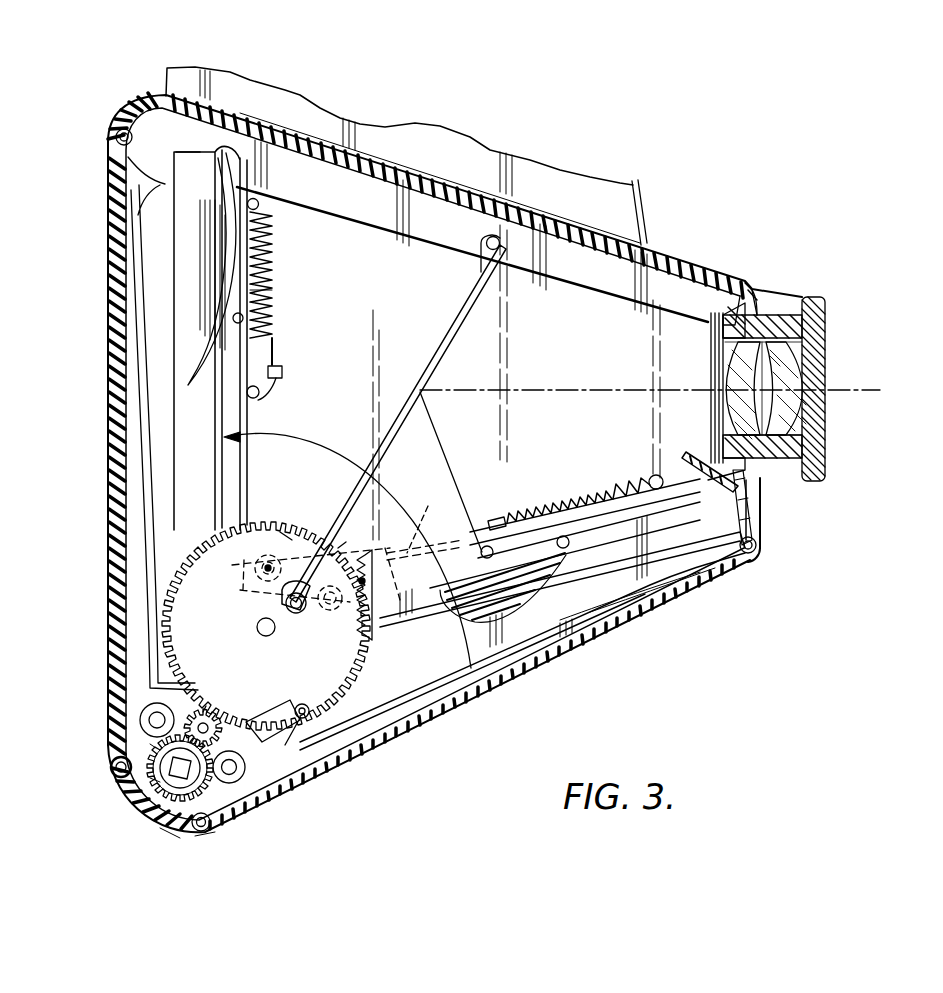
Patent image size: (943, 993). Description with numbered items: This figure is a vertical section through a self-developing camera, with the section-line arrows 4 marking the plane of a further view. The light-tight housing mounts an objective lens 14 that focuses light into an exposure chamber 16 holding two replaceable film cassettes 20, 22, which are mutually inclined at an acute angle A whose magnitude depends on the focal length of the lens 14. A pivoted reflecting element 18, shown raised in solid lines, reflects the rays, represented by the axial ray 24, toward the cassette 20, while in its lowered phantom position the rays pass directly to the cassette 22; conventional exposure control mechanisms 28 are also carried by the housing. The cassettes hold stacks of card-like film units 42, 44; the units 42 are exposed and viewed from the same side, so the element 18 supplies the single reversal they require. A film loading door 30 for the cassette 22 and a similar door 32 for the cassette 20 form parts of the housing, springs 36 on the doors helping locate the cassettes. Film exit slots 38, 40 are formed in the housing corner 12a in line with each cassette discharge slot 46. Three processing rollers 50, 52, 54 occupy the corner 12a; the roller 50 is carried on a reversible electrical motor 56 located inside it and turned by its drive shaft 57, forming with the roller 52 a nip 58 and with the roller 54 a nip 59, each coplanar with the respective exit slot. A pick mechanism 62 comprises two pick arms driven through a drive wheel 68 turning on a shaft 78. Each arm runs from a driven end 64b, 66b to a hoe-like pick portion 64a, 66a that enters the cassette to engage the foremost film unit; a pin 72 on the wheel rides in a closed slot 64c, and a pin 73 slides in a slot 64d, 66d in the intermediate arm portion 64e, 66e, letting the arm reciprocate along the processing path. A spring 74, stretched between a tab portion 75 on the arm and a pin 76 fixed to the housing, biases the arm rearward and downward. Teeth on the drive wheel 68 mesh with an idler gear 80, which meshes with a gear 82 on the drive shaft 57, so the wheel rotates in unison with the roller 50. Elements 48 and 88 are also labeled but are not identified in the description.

The section line 4- 4 is at (290, 82).
The housing corner 12a is at (156, 858).
The objective lens 14 is at (825, 432).
The exposure chamber 16 is at (548, 424).
The pivoted reflecting element 18 is at (445, 352).
The film cassette 20 is at (648, 557).
The film cassette 22 is at (181, 202).
The axial ray 24 is at (590, 390).
The exposure control mechanisms 28 is at (705, 330).
The film loading door 30 is at (108, 410).
The film loading door 32 is at (565, 640).
The springs 36 is at (132, 222).
The film exit slot 38 is at (98, 767).
The film exit slot 40 is at (209, 852).
The film units 42 is at (470, 620).
The film units 44 is at (205, 280).
The film discharge slot 46 is at (258, 702).
The gear teeth 48 is at (210, 688).
The processing roller 50 is at (152, 780).
The processing roller 52 is at (140, 713).
The processing roller 54 is at (236, 784).
The reversible electrical motor 56 is at (153, 790).
The drive shaft 57 is at (179, 780).
The nip 58 is at (135, 738).
The nip 59 is at (220, 801).
The pick mechanism 62 is at (302, 313).
The pick portion 64a is at (700, 472).
The driven end 64b is at (352, 568).
The elongated closed slot 64c is at (340, 553).
The closed slot 64d is at (545, 522).
The arm portion 64e is at (634, 486).
The pick portion 66a is at (187, 122).
The driven end 66b is at (285, 530).
The closed slot 66d is at (270, 290).
The arm portion 66e is at (262, 400).
The drive wheel 68 is at (342, 545).
The pin 72 is at (268, 548).
The pin 73 is at (482, 547).
The spring 74 is at (278, 340).
The tab portion 75 is at (282, 372).
The pin 76 is at (258, 210).
The shaft 78 is at (259, 622).
The idler gear 80 is at (210, 727).
The gear 82 is at (178, 733).
The screw 88 is at (244, 319).
The acute angle A is at (306, 434).